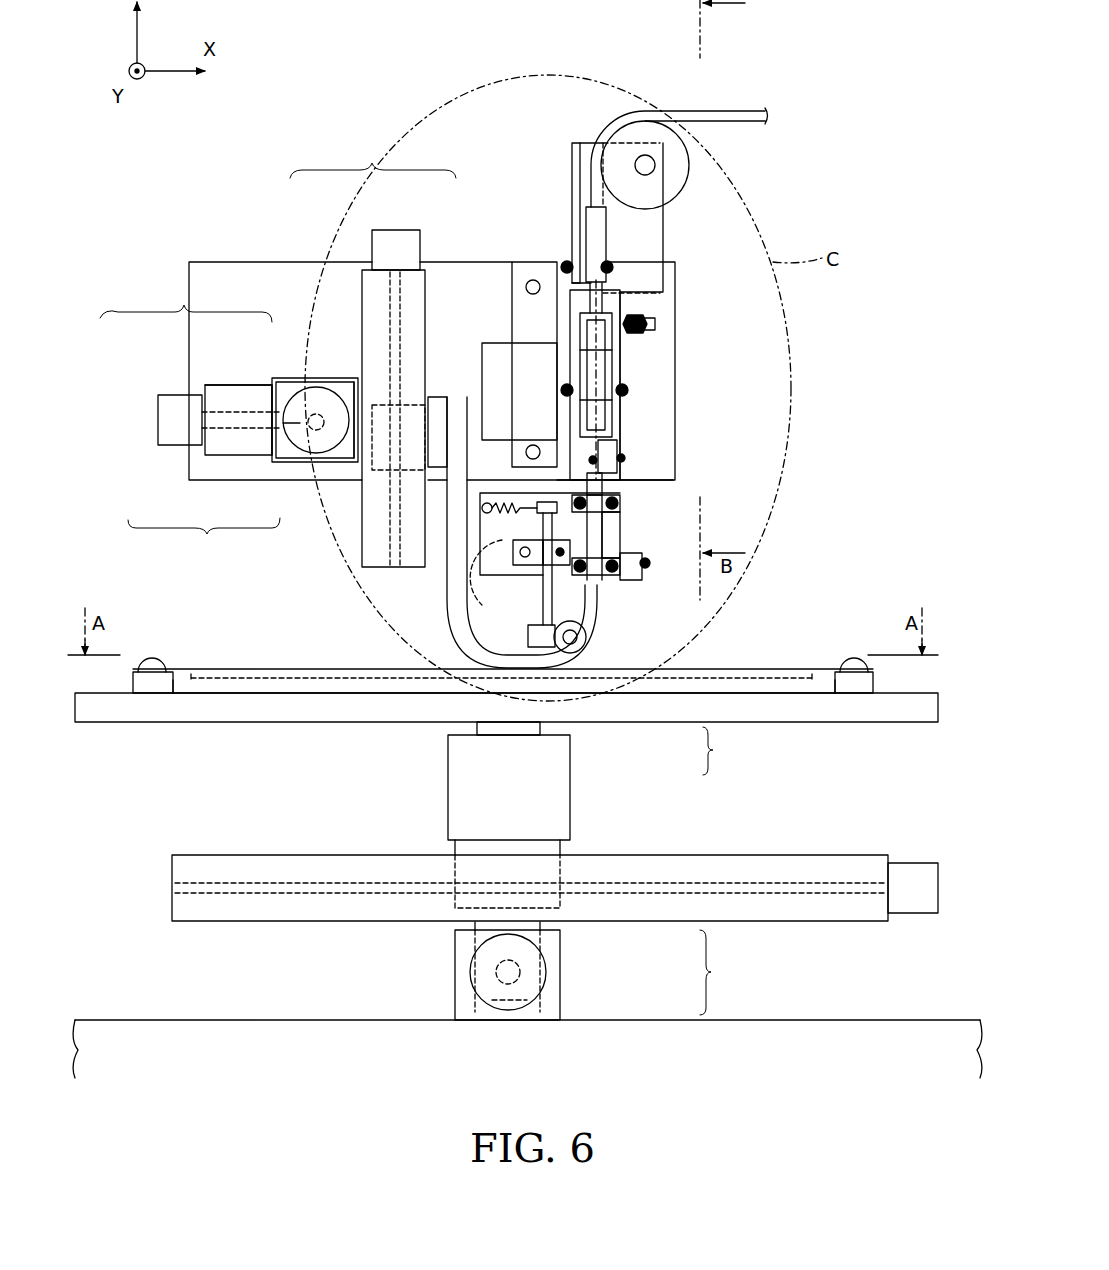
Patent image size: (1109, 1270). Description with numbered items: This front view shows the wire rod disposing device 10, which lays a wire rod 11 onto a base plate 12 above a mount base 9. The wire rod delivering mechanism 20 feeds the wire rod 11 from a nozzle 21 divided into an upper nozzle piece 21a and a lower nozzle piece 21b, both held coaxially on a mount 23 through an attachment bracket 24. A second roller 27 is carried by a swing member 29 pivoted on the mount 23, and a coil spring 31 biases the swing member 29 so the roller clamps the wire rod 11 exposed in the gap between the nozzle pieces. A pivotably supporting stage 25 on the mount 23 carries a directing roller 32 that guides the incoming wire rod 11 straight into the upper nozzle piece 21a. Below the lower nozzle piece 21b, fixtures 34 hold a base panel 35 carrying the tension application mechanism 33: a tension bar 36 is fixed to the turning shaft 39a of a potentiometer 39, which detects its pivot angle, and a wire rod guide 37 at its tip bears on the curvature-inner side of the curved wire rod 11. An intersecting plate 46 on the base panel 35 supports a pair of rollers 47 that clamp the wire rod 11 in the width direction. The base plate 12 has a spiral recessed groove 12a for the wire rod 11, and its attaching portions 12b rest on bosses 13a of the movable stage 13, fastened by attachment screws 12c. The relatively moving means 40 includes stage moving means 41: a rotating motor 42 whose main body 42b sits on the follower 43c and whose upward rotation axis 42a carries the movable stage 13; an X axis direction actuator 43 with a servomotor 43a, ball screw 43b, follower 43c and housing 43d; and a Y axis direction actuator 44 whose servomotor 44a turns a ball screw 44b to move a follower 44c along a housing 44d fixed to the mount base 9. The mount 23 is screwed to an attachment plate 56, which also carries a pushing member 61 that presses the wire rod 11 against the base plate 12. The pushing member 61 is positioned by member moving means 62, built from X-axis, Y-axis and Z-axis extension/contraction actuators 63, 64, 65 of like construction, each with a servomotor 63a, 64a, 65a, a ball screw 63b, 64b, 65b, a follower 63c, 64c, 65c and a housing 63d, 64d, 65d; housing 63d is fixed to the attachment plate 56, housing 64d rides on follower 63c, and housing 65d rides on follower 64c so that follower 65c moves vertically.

The mount base 9 is at (828, 1020).
The wire rod disposing device 10 is at (432, 79).
The wire rod 11 is at (716, 112).
The base plate 12 is at (709, 666).
The recessed groove 12a is at (402, 678).
The attaching portion 12b is at (150, 672).
The attachment screw 12c is at (156, 660).
The movable stage 13 is at (925, 705).
The boss 13a is at (140, 686).
The wire rod delivering mechanism 20 is at (566, 230).
The nozzle 21 is at (628, 466).
The upper nozzle piece 21a is at (606, 228).
The lower nozzle piece 21b is at (622, 488).
The mount 23 is at (563, 265).
The attachment bracket 24 is at (612, 450).
The pivotably supporting stage 25 is at (660, 235).
The second roller 27 is at (602, 368).
The swing member 29 is at (612, 290).
The coil spring 31 is at (640, 312).
The directing roller 32 is at (680, 163).
The tension application mechanism 33 is at (482, 580).
The fixture 34 is at (616, 498).
The base panel 35 is at (618, 540).
The tension bar 36 is at (535, 618).
The wire rod guide 37 is at (548, 622).
The potentiometer 39 is at (503, 565).
The turning shaft 39a is at (527, 567).
The relatively moving means 40 is at (912, 735).
The stage moving means 41 is at (902, 782).
The rotating motor 42 is at (721, 751).
The rotation axis 42a is at (548, 728).
The main body 42b is at (560, 757).
The X axis direction actuator 43 is at (722, 853).
The servomotor 43a is at (910, 865).
The ball screw axis 43b is at (810, 885).
The follower 43c is at (562, 848).
The housing 43d is at (845, 907).
The Y axis direction actuator 44 is at (719, 972).
The servomotor 44a is at (548, 958).
The ball screw 44b is at (520, 980).
The follower 44c is at (548, 928).
The housing 44d is at (565, 1010).
The intersecting plate 46 is at (642, 572).
The roller 47 is at (592, 630).
The attachment plate 56 is at (493, 275).
The pushing member 61 is at (456, 608).
The member moving means 62 is at (290, 298).
The X-axis direction extension/contraction actuator 63 is at (186, 301).
The motor 63a is at (168, 400).
The coupling 63b is at (215, 410).
The follower 63c is at (290, 382).
The housing 63d is at (233, 416).
The Y-axis direction extension/contraction actuator 64 is at (204, 538).
The rotating body 64a is at (312, 422).
The rotating shaft 64b is at (284, 423).
The follower 64c is at (353, 468).
The housing 64d is at (275, 404).
The Z-axis direction extension/contraction actuator 65 is at (373, 158).
The motor 65a is at (390, 240).
The screw 65b is at (376, 405).
The follower 65c is at (438, 397).
The housing 65d is at (366, 300).